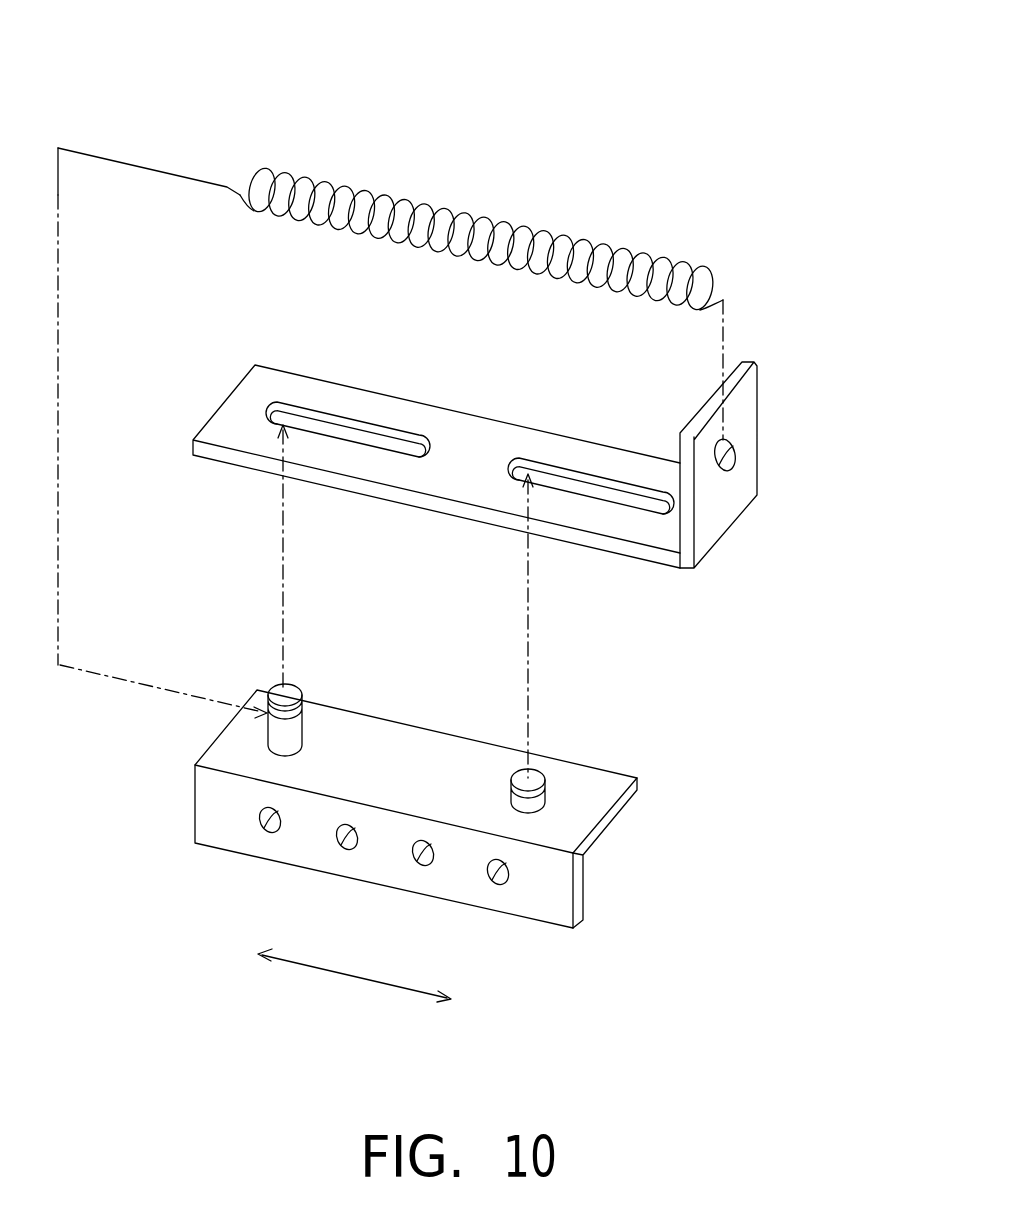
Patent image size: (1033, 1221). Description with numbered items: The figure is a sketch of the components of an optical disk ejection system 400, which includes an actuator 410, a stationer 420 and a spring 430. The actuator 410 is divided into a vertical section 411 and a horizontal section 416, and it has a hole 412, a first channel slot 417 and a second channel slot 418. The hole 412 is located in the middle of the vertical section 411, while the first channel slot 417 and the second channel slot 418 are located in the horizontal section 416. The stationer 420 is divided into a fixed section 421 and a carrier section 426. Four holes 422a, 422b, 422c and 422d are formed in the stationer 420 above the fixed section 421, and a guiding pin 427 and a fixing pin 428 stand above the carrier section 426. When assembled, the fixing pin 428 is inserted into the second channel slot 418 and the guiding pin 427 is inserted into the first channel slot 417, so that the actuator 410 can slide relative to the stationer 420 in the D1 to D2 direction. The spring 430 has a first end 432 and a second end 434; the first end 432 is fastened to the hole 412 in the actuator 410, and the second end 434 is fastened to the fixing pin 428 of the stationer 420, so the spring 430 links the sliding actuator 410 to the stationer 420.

The optical disk ejection system 400 is at (465, 514).
The actuator 410 is at (528, 463).
The vertical section 411 is at (776, 399).
The hole 412 is at (738, 453).
The horizontal section 416 is at (432, 416).
The first channel slot 417 is at (515, 458).
The second channel slot 418 is at (388, 422).
The stationer 420 is at (408, 816).
The fixed section 421 is at (557, 894).
The hole 422a is at (262, 826).
The hole 422b is at (347, 850).
The hole 422c is at (427, 868).
The hole 422d is at (499, 886).
The carrier section 426 is at (565, 788).
The guiding pin 427 is at (548, 796).
The fixing pin 428 is at (250, 748).
The spring 430 is at (480, 156).
The first end 432 is at (701, 265).
The second end 434 is at (242, 200).